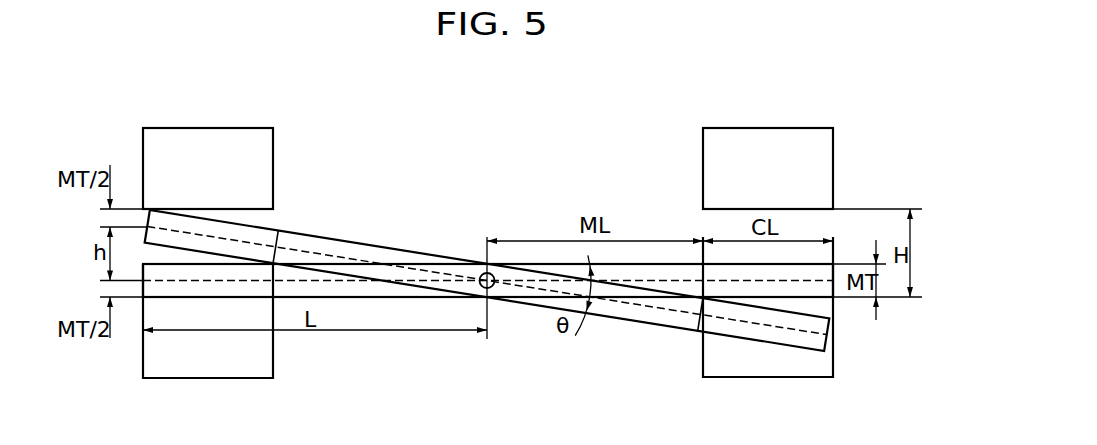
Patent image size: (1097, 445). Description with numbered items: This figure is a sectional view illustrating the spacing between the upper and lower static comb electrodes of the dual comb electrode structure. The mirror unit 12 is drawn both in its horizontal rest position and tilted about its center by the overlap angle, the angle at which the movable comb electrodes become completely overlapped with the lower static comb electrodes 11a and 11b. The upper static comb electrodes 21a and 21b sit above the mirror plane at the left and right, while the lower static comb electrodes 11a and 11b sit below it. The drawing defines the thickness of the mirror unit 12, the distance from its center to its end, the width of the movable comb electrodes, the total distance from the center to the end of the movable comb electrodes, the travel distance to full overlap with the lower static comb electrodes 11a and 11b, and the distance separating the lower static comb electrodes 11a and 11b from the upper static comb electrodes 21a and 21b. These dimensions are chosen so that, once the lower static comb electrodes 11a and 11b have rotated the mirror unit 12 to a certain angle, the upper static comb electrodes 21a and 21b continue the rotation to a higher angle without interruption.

The upper static comb electrode 21a is at (255, 165).
The upper static comb electrode 21b is at (722, 165).
The lower static comb electrode 11a is at (255, 353).
The lower static comb electrode 11b is at (722, 355).
The mirror unit 12 is at (465, 240).